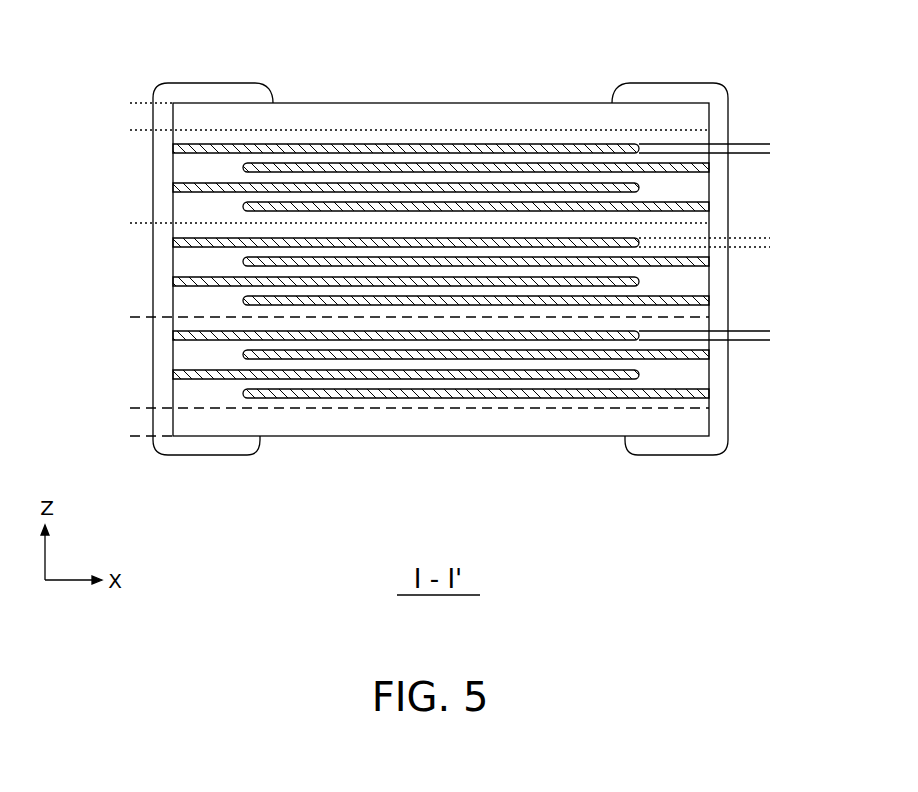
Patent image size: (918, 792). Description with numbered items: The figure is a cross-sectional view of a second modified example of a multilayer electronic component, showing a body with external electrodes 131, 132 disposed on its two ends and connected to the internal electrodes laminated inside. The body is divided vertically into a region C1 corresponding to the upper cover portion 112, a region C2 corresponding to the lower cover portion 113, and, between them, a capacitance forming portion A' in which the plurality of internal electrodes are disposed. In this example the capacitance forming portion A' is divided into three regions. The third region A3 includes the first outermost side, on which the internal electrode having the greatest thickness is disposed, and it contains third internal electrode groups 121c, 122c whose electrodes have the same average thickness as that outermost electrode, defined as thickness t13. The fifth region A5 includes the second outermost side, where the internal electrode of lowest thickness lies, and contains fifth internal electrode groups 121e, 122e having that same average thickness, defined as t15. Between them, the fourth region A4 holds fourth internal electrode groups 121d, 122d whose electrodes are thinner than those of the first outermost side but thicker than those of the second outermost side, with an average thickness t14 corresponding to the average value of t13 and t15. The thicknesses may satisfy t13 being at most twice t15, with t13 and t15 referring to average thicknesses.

The upper cover portion 112 is at (450, 103).
The lower cover portion 113 is at (445, 436).
The third internal electrode group 121c is at (328, 143).
The fourth internal electrode group 121d is at (296, 286).
The fifth internal electrode group 121e is at (380, 379).
The third internal electrode group 122c is at (558, 163).
The fourth internal electrode group 122d is at (503, 305).
The fifth internal electrode group 122e is at (585, 398).
The external electrode 131 is at (207, 458).
The external electrode 132 is at (680, 458).
The thickness of third internal electrode groups t13 is at (760, 112).
The average thickness of fourth internal electrode groups t14 is at (760, 210).
The thickness of fifth internal electrode groups t15 is at (760, 305).
The region corresponding to upper cover portion C1 is at (130, 103).
The region corresponding to lower cover portion C2 is at (130, 412).
The third region A3 is at (130, 135).
The fourth region A4 is at (130, 226).
The fifth region A5 is at (130, 320).
The capacitance forming portion A' is at (50, 272).